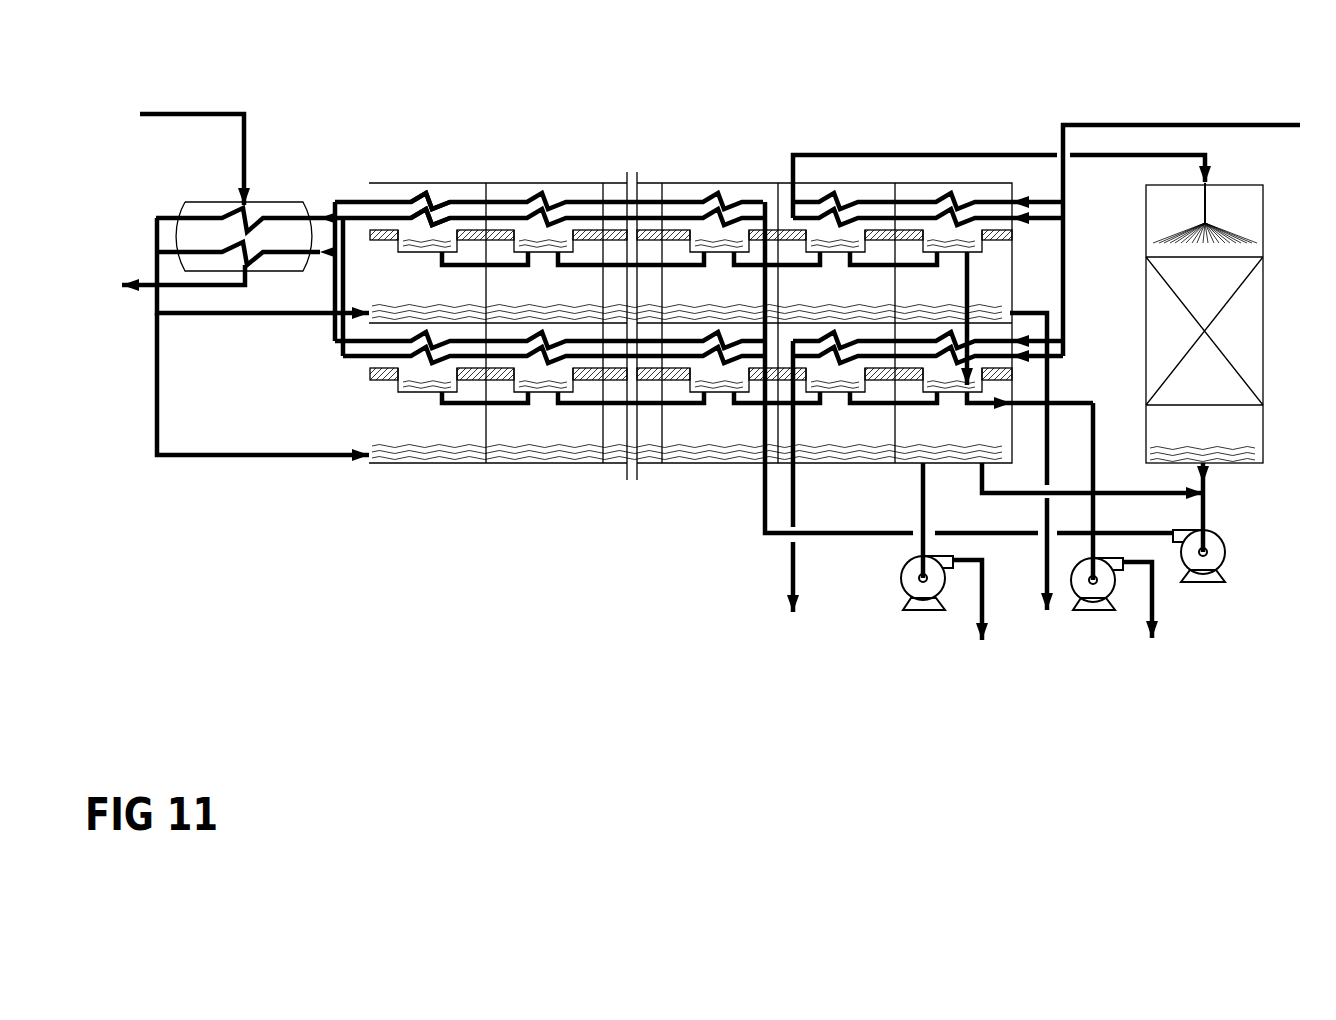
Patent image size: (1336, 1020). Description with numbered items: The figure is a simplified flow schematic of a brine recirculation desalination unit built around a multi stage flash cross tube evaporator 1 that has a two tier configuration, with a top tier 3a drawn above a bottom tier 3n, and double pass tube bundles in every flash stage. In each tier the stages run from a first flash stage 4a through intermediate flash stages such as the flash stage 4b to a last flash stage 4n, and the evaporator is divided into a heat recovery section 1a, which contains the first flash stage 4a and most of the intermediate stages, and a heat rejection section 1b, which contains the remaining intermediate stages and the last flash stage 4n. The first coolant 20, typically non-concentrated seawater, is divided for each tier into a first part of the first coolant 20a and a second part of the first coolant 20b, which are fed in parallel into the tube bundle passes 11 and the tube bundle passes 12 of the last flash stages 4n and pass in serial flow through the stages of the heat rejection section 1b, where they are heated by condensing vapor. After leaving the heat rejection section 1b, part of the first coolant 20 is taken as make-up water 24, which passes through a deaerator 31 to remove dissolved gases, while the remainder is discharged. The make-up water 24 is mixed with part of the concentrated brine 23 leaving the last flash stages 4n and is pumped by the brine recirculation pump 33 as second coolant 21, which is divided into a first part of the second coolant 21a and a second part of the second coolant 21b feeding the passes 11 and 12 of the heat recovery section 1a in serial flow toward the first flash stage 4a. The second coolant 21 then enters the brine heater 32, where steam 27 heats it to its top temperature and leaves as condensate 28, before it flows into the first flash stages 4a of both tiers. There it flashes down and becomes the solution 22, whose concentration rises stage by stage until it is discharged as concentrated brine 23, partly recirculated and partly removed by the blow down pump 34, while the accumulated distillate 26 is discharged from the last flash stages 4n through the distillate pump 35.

The evaporator 1 is at (440, 185).
The heat recovery section 1a is at (683, 185).
The heat rejection section 1b is at (825, 185).
The top tier 3a is at (386, 200).
The bottom tier 3n is at (368, 423).
The first flash stage 4a is at (430, 296).
The intermediate flash stage 4b is at (563, 304).
The last flash stage 4n is at (953, 300).
The tube bundle pass 11 is at (500, 200).
The tube bundle pass 12 is at (522, 200).
The first coolant 20 is at (1240, 125).
The first part of the first coolant 20a is at (1057, 200).
The second part of the first coolant 20b is at (1053, 217).
The second coolant 21 is at (248, 460).
The first part of the second coolant 21a is at (387, 200).
The second part of the second coolant 21b is at (358, 217).
The solution 22 is at (567, 456).
The concentrated brine 23 is at (1122, 490).
The make-up water 24 is at (853, 155).
The distillate 26 is at (1157, 598).
The steam 27 is at (193, 117).
The condensate 28 is at (143, 290).
The deaerator 31 is at (1233, 183).
The brine heater 32 is at (275, 200).
The brine recirculation pump 33 is at (1227, 537).
The blow down pump 34 is at (900, 587).
The distillate pump 35 is at (1068, 600).